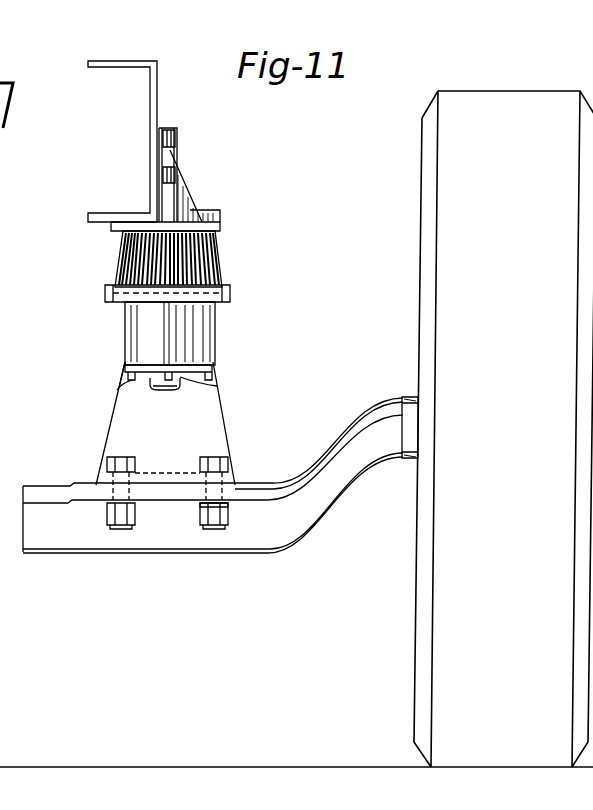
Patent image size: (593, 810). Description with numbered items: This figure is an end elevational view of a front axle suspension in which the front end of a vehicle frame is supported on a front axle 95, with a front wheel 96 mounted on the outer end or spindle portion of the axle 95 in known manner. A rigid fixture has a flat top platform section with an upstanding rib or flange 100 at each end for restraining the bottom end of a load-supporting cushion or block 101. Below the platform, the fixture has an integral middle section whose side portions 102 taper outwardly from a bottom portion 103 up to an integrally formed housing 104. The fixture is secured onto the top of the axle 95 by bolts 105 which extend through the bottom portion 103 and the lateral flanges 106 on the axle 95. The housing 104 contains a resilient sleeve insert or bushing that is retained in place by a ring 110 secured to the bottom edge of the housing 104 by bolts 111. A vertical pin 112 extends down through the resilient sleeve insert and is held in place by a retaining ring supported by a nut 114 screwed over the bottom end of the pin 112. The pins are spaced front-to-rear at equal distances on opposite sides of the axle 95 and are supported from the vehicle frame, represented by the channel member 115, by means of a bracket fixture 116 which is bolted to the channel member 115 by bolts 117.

The front axle 95 is at (285, 472).
The front wheel 96 is at (478, 91).
The upstanding rib or flange 100 is at (231, 296).
The load-supporting cushion or block 101 is at (216, 252).
The side portion 102 is at (110, 437).
The bottom portion 103 is at (148, 472).
The housing 104 is at (215, 331).
The bolt 105 is at (195, 524).
The lateral flange 106 is at (222, 494).
The ring 110 is at (212, 369).
The bolt 111 is at (122, 387).
The vertical pin 112 is at (166, 389).
The nut 114 is at (205, 385).
The channel member 115 is at (157, 90).
The bracket fixture 116 is at (161, 132).
The bolt 117 is at (172, 148).